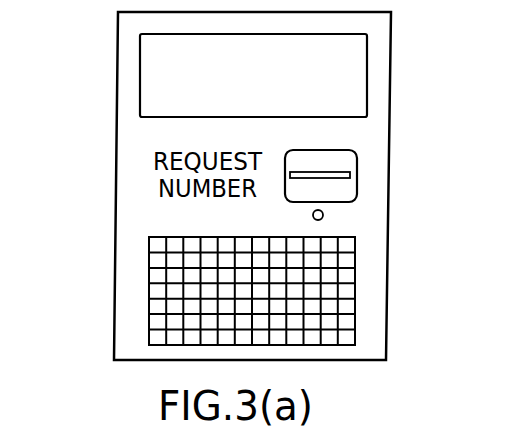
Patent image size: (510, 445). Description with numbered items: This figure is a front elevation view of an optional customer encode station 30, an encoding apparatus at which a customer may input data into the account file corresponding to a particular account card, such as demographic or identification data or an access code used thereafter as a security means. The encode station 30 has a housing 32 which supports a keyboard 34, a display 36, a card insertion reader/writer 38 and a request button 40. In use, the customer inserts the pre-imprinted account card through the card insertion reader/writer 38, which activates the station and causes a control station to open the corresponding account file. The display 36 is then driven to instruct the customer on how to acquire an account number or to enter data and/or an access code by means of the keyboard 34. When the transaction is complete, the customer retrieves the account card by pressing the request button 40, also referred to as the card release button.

The customer encode station 30 is at (97, 110).
The housing 32 is at (125, 213).
The keyboard 34 is at (153, 307).
The display 36 is at (270, 86).
The card insertion reader/writer 38 is at (343, 160).
The request button 40 is at (324, 214).